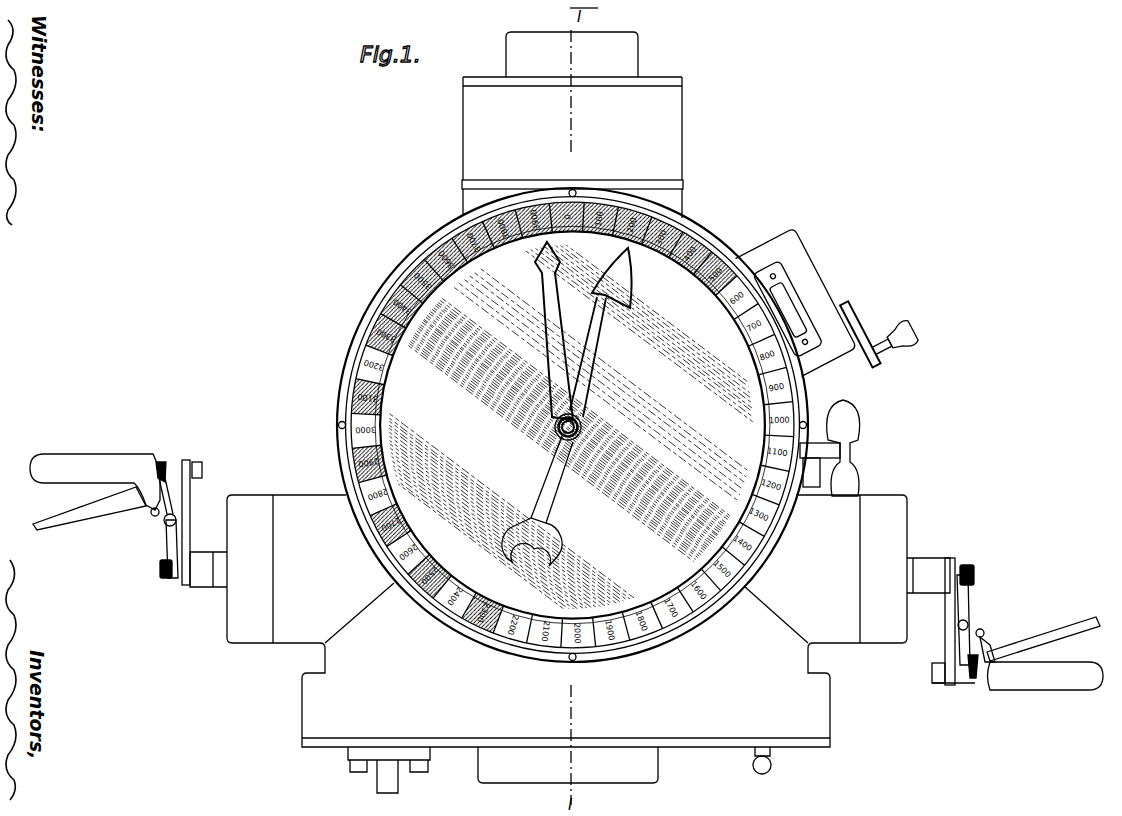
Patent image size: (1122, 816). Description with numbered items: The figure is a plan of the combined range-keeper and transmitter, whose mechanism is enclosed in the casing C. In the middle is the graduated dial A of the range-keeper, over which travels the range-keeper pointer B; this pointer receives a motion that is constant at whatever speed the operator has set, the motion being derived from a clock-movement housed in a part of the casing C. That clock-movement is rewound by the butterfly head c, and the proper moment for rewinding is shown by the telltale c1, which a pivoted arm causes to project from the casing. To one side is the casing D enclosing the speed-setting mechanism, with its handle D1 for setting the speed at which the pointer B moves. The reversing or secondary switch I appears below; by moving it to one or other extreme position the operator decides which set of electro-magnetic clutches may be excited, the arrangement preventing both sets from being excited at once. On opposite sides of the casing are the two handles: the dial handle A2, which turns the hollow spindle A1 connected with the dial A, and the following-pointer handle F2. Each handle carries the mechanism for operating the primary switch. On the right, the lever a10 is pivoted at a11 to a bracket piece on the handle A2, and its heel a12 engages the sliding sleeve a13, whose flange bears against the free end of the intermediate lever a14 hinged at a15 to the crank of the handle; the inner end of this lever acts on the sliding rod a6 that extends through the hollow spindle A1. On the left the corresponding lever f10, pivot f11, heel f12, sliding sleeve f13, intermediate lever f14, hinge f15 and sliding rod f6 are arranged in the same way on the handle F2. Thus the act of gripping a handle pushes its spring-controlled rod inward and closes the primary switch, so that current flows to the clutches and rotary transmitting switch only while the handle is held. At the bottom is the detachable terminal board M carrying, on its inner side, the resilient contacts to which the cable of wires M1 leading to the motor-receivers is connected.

The casing C is at (567, 407).
The butterfly head c is at (835, 423).
The telltale c1 is at (817, 478).
The casing D is at (808, 311).
The handle D1 is at (905, 334).
The graduated dial A is at (618, 332).
The spindle A1 is at (549, 333).
The traveling range-keeper pointer B is at (553, 467).
The terminal board M is at (348, 752).
The cable of wires M1 is at (390, 776).
The reversing switch I is at (771, 770).
The handle F2 is at (73, 470).
The lever f10 is at (80, 516).
The pivot f11 is at (151, 515).
The heel f12 is at (158, 466).
The sliding sleeve f13 is at (162, 463).
The intermediate lever f14 is at (170, 545).
The hinge f15 is at (165, 525).
The sliding rod f6 is at (164, 580).
The handle A2 is at (1062, 674).
The lever a10 is at (1063, 627).
The pivot a11 is at (984, 633).
The heel a12 is at (975, 678).
The sliding sleeve a13 is at (972, 684).
The intermediate lever a14 is at (964, 600).
The hinge a15 is at (968, 624).
The sliding rod a6 is at (969, 567).